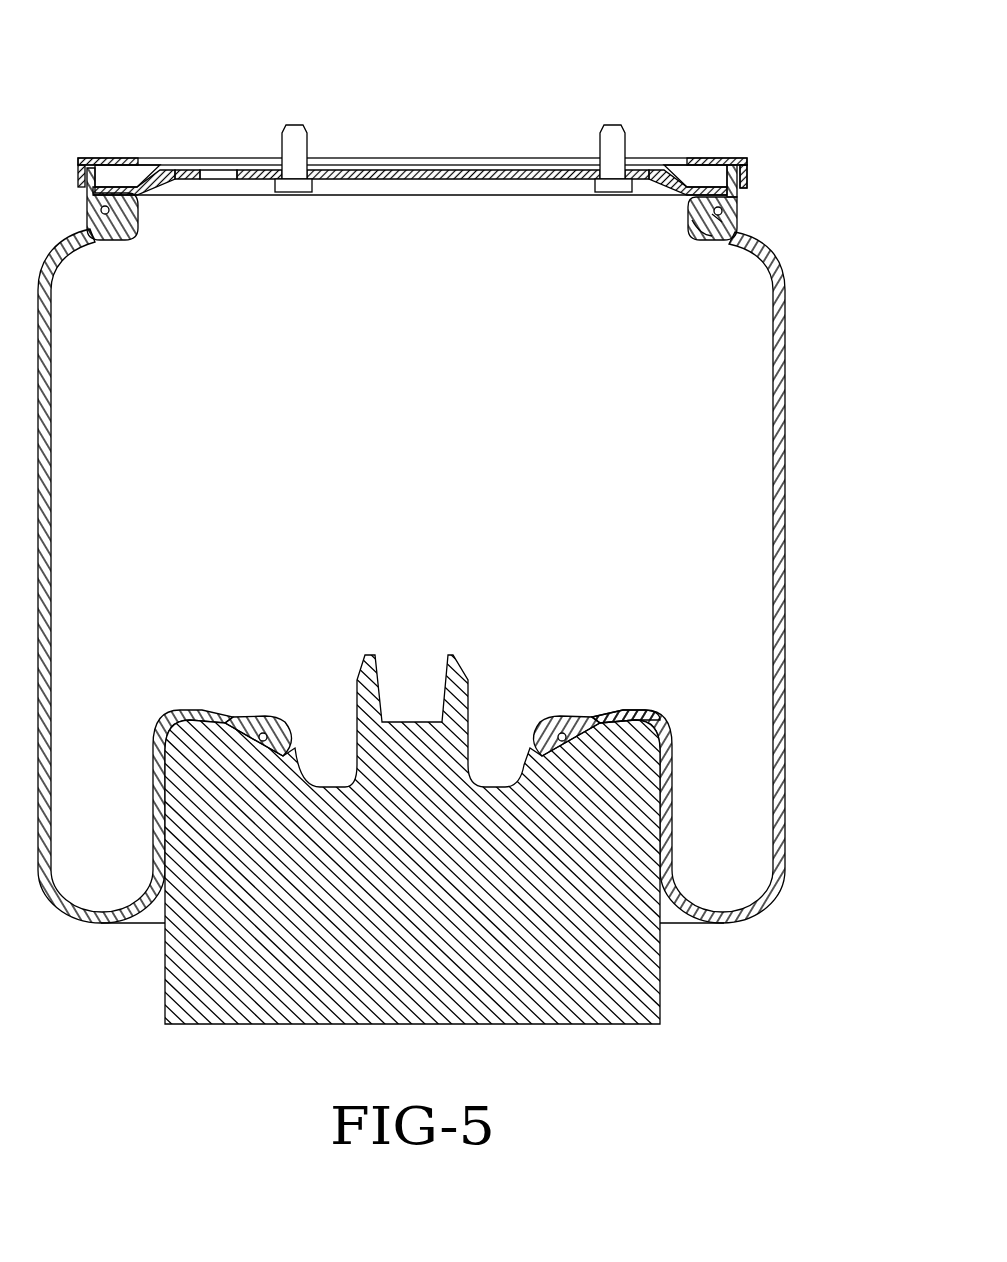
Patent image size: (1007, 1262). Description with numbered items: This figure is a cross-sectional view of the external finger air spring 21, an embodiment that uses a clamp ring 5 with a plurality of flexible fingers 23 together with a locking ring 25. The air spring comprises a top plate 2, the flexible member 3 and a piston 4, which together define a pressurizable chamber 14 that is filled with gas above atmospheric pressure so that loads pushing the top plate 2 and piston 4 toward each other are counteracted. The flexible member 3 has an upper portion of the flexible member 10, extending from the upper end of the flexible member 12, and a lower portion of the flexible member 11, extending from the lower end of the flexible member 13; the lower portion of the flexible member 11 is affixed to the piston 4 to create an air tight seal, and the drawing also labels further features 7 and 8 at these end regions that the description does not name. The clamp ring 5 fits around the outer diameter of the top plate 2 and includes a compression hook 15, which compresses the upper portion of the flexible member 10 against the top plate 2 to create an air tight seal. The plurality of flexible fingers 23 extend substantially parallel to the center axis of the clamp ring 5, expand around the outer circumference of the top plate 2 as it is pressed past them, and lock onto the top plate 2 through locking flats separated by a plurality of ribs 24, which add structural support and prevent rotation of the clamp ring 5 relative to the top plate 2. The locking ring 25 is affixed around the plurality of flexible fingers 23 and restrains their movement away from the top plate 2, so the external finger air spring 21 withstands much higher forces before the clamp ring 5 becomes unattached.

The external finger air spring 21 is at (539, 122).
The top plate 2 is at (437, 172).
The flexible member 3 is at (789, 378).
The piston 4 is at (618, 993).
The clamp ring 5 is at (717, 221).
The bellows upper end portion 7 is at (736, 213).
The lower bead wire 8 is at (562, 733).
The upper portion of the flexible member 10 is at (712, 200).
The lower portion of the flexible member 11 is at (595, 727).
The upper end of the flexible member 12 is at (724, 214).
The lower end of the flexible member 13 is at (542, 749).
The pressurizable chamber 14 is at (548, 472).
The compression hook 15 is at (702, 223).
The plurality of flexible fingers 23 is at (748, 162).
The plurality of ribs 24 is at (141, 178).
The locking ring 25 is at (706, 160).